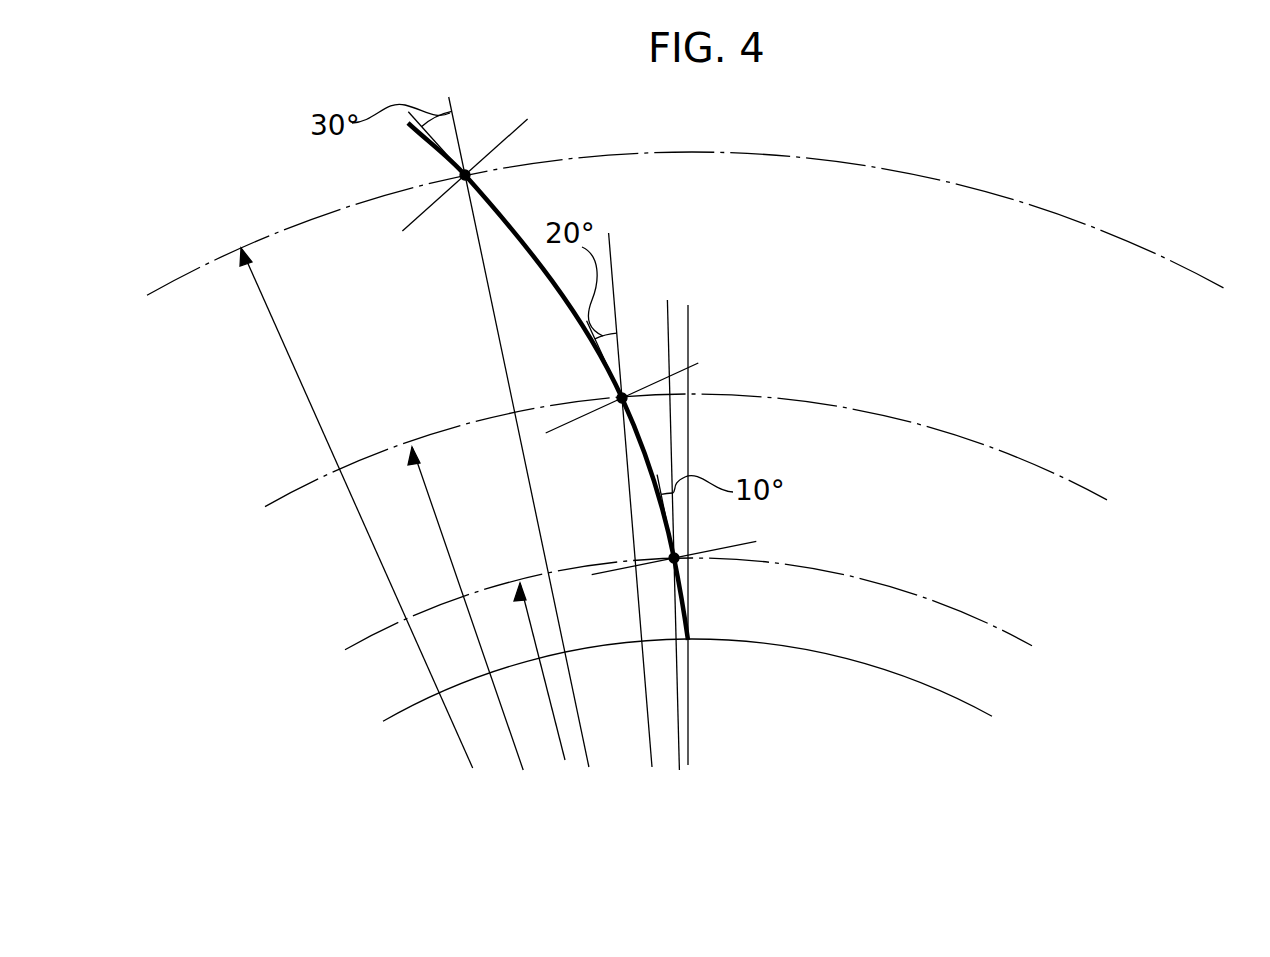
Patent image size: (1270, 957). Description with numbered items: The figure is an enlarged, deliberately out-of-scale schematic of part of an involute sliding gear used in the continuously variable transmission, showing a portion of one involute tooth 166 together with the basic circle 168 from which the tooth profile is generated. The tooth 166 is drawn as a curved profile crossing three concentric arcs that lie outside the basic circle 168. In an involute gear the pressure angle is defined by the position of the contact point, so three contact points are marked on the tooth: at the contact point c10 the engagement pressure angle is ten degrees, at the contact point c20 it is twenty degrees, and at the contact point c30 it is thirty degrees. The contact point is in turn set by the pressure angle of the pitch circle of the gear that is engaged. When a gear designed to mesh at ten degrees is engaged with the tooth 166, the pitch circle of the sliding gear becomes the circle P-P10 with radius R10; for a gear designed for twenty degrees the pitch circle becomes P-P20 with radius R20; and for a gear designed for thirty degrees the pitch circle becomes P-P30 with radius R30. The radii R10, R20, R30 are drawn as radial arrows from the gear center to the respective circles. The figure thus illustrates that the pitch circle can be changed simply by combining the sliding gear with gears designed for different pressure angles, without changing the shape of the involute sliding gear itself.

The involute tooth 166 is at (540, 270).
The basic circle 168 is at (922, 683).
The contact point c30 is at (460, 190).
The contact point c20 is at (627, 393).
The contact point c10 is at (680, 565).
The pitch circle P-P30 is at (1098, 228).
The pitch circle P-P20 is at (1008, 453).
The pitch circle P-P10 is at (952, 605).
The radius of the pitch circle R30 is at (457, 747).
The radius of the pitch circle R20 is at (513, 750).
The radius of the pitch circle R10 is at (562, 750).